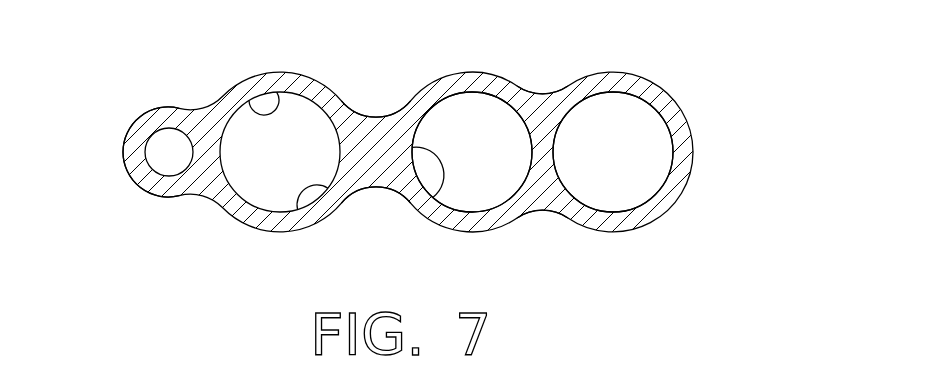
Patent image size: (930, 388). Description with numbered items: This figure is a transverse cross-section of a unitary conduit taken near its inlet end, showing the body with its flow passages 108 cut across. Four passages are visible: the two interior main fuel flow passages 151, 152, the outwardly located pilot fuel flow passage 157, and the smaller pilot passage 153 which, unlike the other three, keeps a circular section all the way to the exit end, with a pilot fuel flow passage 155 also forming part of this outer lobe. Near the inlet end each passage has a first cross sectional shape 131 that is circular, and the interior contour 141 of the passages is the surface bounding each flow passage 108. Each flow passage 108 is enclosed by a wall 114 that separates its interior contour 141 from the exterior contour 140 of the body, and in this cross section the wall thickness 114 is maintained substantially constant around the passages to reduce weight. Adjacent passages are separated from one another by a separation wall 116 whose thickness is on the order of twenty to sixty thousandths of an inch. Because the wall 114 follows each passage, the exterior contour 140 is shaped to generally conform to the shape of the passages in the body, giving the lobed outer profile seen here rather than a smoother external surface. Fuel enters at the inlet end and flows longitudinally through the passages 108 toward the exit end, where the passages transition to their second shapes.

The flow passage 108 is at (500, 182).
The wall 114 is at (644, 82).
The separation wall 116 is at (375, 143).
The first cross sectional shape 131 is at (250, 104).
The exterior contour 140 is at (333, 88).
The interior contour 141 is at (305, 212).
The main fuel flow passage 151 is at (278, 187).
The main fuel flow passage 152 is at (475, 197).
The pilot passage 153 is at (158, 145).
The pilot fuel flow passage 155 is at (167, 158).
The pilot fuel flow passage 157 is at (650, 148).